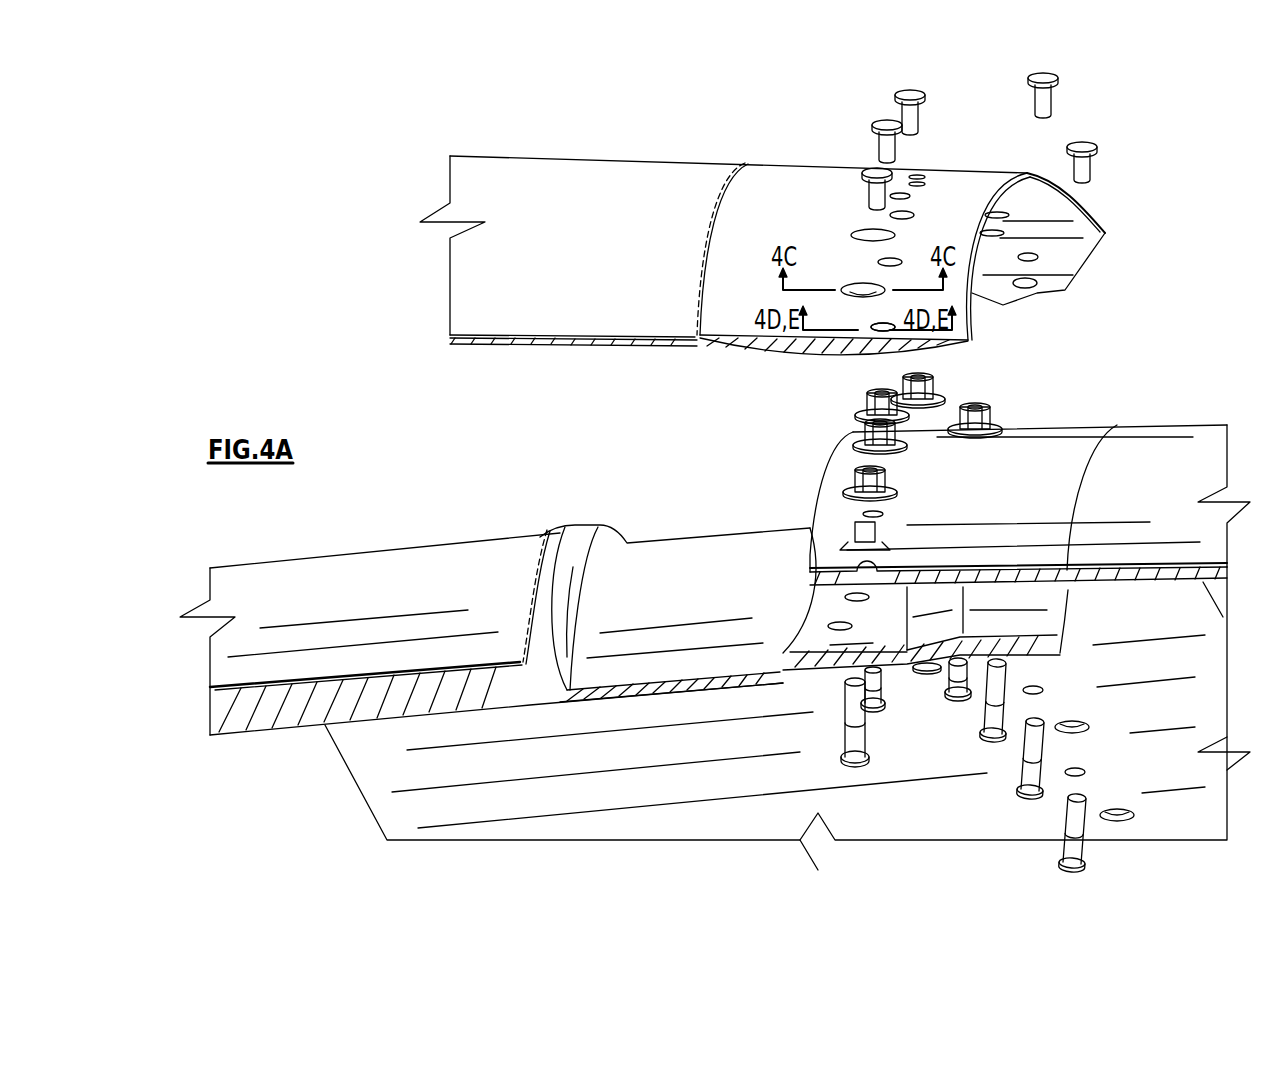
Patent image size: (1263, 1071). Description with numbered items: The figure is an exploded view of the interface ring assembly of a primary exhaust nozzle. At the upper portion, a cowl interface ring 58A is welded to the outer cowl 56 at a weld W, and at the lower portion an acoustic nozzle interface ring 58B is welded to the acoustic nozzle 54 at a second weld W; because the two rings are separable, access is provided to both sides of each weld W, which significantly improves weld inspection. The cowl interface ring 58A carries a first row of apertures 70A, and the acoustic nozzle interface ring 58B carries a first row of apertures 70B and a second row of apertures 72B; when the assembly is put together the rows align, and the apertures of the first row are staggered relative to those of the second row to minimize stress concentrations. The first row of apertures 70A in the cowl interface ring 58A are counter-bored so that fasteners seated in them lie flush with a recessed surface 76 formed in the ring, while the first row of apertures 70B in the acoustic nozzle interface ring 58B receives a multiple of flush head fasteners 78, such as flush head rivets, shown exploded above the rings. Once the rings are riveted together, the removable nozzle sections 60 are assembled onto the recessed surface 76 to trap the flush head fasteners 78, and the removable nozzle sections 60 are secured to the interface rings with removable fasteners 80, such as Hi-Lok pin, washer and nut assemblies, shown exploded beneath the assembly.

The acoustic nozzle 54 is at (356, 593).
The outer cowl 56 is at (585, 268).
The cowl interface ring 58A is at (797, 230).
The acoustic nozzle interface ring 58B is at (759, 597).
The removable nozzle sections 60 is at (1040, 507).
The first row of apertures 70A is at (868, 283).
The first row of apertures 70B is at (871, 329).
The second row of apertures 72B is at (846, 598).
The recessed surface 76 is at (956, 222).
The flush head fastener 78 is at (892, 99).
The removable fastener 80 is at (1066, 845).
The weld W is at (700, 240).